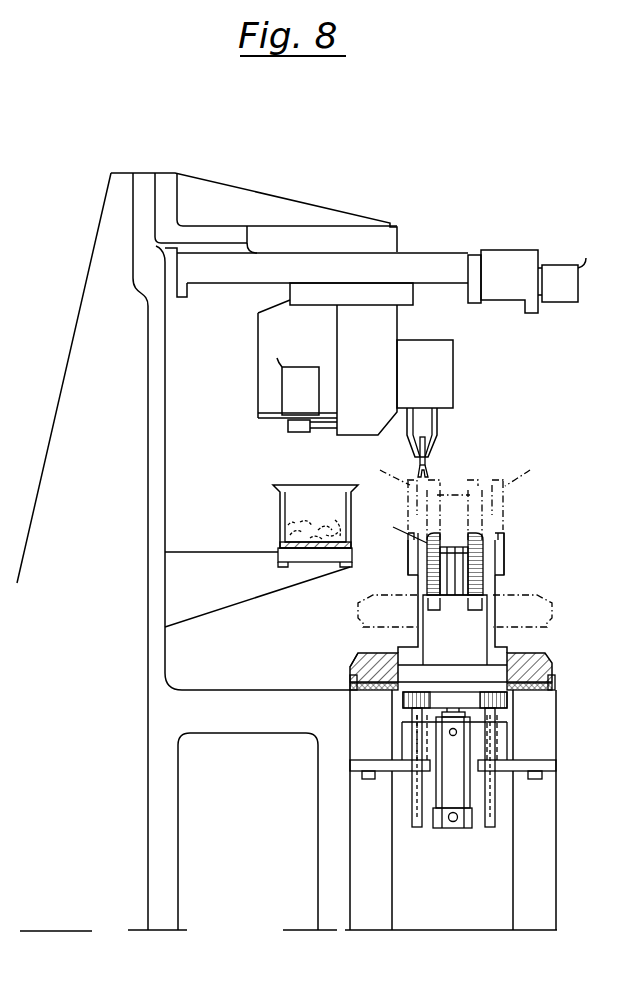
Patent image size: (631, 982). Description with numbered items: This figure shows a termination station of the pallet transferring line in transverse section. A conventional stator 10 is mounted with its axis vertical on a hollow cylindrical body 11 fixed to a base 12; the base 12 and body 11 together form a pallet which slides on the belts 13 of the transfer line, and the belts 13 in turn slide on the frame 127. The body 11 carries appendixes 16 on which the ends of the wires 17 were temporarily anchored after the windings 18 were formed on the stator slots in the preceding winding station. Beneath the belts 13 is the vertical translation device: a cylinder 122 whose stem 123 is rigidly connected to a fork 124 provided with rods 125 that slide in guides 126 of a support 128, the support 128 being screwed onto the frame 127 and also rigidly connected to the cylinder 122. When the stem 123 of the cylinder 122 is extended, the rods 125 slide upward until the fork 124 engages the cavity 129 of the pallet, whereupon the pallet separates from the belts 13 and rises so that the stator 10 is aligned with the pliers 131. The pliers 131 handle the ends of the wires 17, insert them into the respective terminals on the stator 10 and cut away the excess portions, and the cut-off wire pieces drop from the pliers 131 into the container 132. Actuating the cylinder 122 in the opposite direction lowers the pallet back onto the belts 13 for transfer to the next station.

The stator 10 is at (458, 487).
The hollow cylindrical body 11 is at (493, 633).
The base 12 is at (352, 606).
The belts 13 is at (540, 693).
The appendixes 16 is at (408, 556).
The wires 17 is at (410, 485).
The windings 18 is at (427, 584).
The cylinder 122 is at (458, 828).
The stem 123 is at (456, 714).
The fork 124 is at (403, 700).
The rods 125 is at (418, 802).
The guides 126 is at (490, 746).
The frame 127 is at (530, 733).
The support 128 is at (392, 767).
The cavity 129 is at (358, 664).
The pliers 131 is at (432, 468).
The container 132 is at (292, 507).